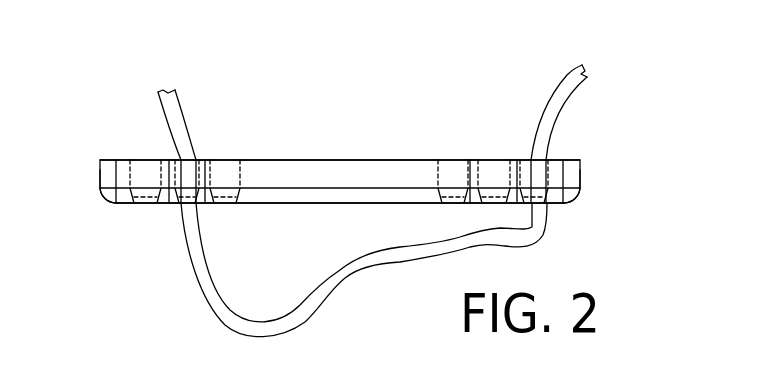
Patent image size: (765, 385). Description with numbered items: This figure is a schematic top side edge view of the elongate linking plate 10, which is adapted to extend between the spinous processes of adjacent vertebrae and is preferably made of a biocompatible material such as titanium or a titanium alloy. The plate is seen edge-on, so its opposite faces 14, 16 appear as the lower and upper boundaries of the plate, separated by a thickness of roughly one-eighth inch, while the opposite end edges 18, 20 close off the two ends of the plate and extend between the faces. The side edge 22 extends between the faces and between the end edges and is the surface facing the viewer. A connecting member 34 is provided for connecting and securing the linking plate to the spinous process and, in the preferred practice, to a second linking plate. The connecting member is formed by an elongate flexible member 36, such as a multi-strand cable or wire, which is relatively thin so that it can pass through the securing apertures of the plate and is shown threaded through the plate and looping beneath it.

The linking plate 10 is at (358, 167).
The face 14 is at (340, 204).
The face 16 is at (397, 160).
The end edge 18 is at (102, 203).
The end edge 20 is at (582, 176).
The side edge 22 is at (248, 168).
The connecting member 34 is at (580, 132).
The elongate flexible member 36 is at (556, 107).